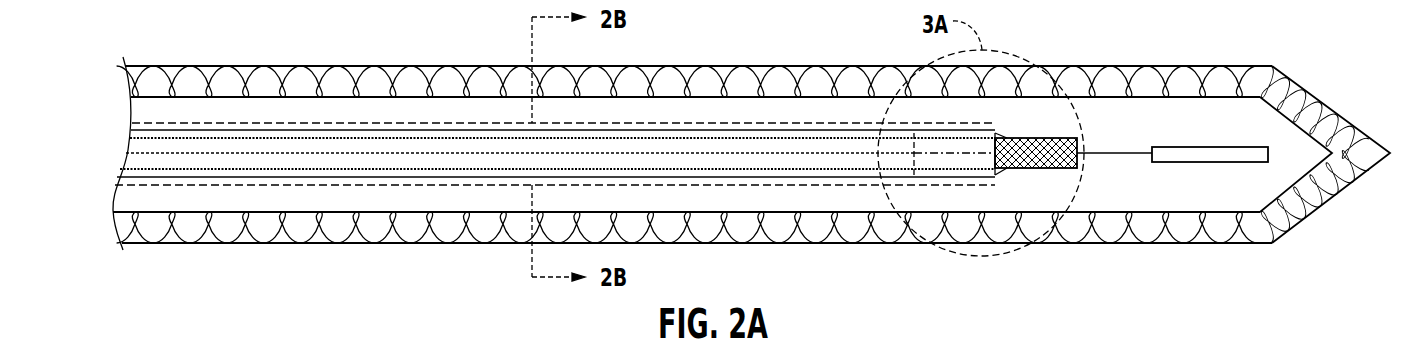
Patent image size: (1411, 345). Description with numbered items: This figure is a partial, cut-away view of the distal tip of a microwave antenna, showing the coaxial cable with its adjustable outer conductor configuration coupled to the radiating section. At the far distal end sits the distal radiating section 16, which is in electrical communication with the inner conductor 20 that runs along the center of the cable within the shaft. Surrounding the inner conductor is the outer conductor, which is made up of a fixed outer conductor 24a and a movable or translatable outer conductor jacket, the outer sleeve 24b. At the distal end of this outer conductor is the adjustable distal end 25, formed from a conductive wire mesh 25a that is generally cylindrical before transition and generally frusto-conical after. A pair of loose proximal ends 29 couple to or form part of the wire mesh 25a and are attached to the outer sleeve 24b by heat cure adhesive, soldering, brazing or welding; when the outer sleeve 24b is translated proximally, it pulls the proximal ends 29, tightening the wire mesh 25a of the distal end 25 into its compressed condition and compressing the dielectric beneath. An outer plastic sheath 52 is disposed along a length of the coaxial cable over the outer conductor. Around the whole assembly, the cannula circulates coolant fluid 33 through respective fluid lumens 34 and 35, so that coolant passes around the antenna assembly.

The distal radiating section 16 is at (1280, 222).
The inner conductor 20 is at (1137, 153).
The fixed outer conductor 24a is at (550, 138).
The outer sleeve 24b is at (650, 130).
The adjustable distal end 25 is at (1027, 137).
The wire mesh 25a is at (1075, 168).
The loose proximal ends 29 is at (1002, 175).
The coolant fluid 33 is at (217, 225).
The fluid lumen 34 is at (342, 88).
The fluid lumen 35 is at (307, 225).
The outer plastic sheath 52 is at (753, 123).